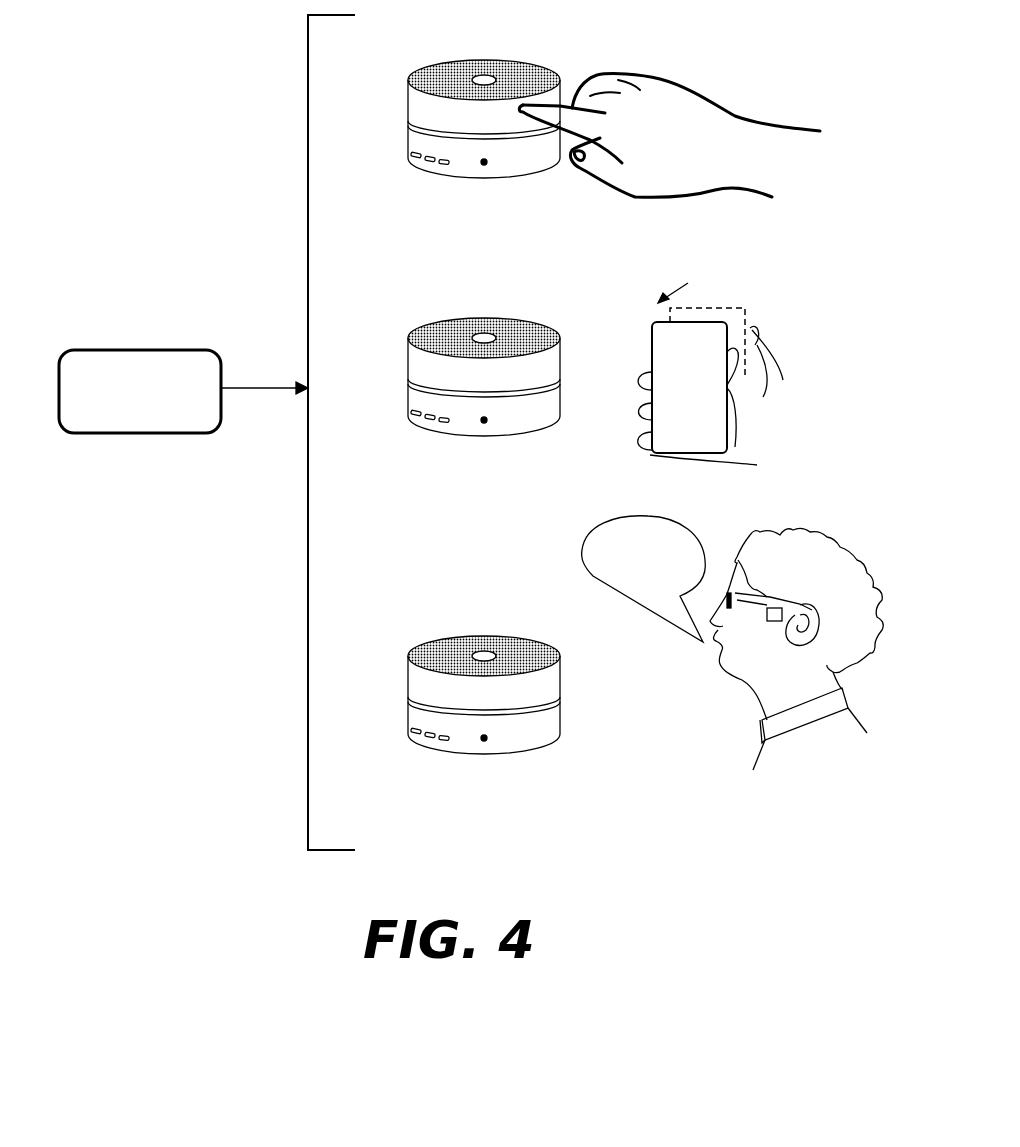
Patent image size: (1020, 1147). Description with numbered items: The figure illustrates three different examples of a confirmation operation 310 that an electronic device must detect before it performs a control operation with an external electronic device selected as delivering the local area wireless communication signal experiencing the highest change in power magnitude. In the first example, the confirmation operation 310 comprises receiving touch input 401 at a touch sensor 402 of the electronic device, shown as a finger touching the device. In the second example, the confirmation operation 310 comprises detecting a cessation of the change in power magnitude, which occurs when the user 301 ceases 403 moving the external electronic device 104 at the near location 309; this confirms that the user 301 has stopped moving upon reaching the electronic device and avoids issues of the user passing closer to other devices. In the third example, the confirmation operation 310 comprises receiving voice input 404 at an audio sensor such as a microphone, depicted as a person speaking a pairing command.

The confirmation operation 310 is at (157, 350).
The touch input 401 is at (545, 108).
The touch sensor 402 is at (437, 115).
The ceasing movement 403 is at (603, 303).
The external electronic device 104 is at (682, 355).
The user 301 is at (650, 408).
The near location 309 is at (757, 285).
The voice input 404 is at (690, 522).